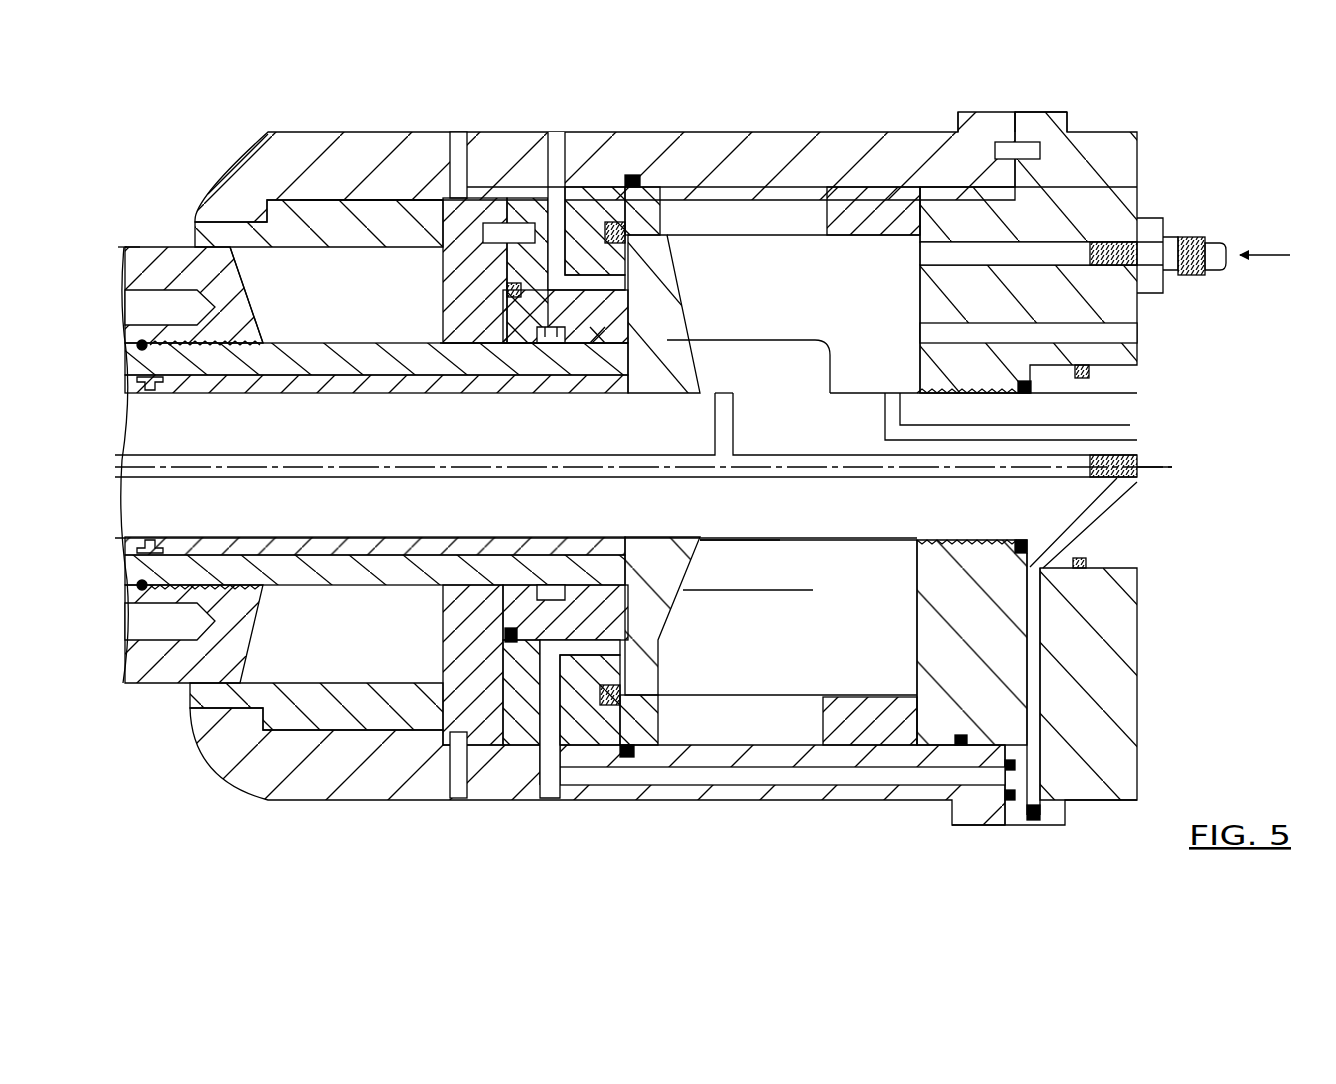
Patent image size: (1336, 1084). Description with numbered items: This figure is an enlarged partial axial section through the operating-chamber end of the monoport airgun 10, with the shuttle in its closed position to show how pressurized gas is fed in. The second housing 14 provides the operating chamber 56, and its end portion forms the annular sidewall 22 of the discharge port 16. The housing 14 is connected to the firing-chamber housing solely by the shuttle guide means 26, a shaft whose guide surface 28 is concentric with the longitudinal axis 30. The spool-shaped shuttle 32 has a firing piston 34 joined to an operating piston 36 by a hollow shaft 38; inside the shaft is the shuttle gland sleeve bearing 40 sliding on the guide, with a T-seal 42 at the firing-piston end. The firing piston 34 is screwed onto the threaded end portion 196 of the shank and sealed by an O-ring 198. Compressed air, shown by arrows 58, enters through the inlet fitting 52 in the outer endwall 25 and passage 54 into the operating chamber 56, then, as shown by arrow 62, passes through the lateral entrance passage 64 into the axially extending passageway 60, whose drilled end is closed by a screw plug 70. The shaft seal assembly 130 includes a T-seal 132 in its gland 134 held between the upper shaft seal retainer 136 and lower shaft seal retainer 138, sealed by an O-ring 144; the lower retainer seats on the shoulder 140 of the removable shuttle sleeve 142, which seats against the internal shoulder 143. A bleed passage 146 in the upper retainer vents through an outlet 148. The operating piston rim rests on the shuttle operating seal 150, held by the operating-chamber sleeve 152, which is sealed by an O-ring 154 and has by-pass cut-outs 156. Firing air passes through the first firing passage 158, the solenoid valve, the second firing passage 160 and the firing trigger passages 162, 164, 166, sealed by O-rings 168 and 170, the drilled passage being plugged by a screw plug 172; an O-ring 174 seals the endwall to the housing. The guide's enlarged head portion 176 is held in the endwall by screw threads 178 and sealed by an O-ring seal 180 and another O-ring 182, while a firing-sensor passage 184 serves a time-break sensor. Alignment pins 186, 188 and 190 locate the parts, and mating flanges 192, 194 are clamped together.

The monoport airgun 10 is at (1035, 58).
The second housing 14 is at (517, 132).
The discharge port 16 is at (155, 158).
The annular sidewall 22 is at (262, 170).
The outer endwall 25 is at (1128, 635).
The shuttle guide means 26 is at (772, 548).
The guide surface 28 is at (707, 590).
The longitudinal axis 30 is at (985, 480).
The shuttle 32 is at (367, 335).
The firing piston 34 is at (130, 243).
The operating piston 36 is at (680, 258).
The hollow shaft 38 is at (300, 345).
The shuttle gland sleeve bearing 40 is at (470, 345).
The T-seal 42 is at (165, 390).
The inlet fitting 52 is at (1188, 237).
The passage 54 is at (1060, 250).
The operating chamber 56 is at (733, 283).
The infeed arrows 58 is at (1262, 255).
The axially extending passageway 60 is at (588, 455).
The compressed air flow arrow 62 is at (728, 388).
The lateral entrance passage 64 is at (735, 430).
The screw plug 70 is at (1122, 458).
The shuttle shaft seal assembly 130 is at (395, 360).
The T-seal 132 is at (540, 343).
The gland 134 is at (612, 343).
The upper shaft seal retainer 136 is at (630, 175).
The lower shaft seal retainer 138 is at (455, 272).
The shoulder 140 is at (448, 198).
The removable shuttle sleeve 142 is at (374, 205).
The internal shoulder 143 is at (283, 198).
The O-ring 144 is at (503, 635).
The bleed passage 146 is at (585, 235).
The outlet 148 is at (552, 195).
The shuttle operating seal 150 is at (650, 200).
The operating-chamber sleeve 152 is at (870, 200).
The O-ring 154 is at (627, 760).
The by-pass cut-outs 156 is at (850, 205).
The first firing passage 158 is at (1120, 333).
The second firing passage 160 is at (1098, 512).
The firing trigger passage 162 is at (1035, 725).
The firing trigger passage 164 is at (818, 785).
The firing trigger passage 166 is at (535, 710).
The O-ring 168 is at (1005, 800).
The O-ring 170 is at (565, 750).
The screw plug 172 is at (1040, 822).
The O-ring 174 is at (958, 748).
The enlarged head portion 176 is at (1128, 395).
The screw threads 178 is at (940, 540).
The O-ring seal 180 is at (1022, 540).
The O-ring 182 is at (1090, 563).
The firing-sensor passage 184 is at (1128, 430).
The alignment pin 186 is at (1038, 150).
The alignment pin 188 is at (483, 233).
The second alignment pin 190 is at (458, 185).
The mating flange 192 is at (988, 112).
The mating flange 194 is at (1050, 112).
The threaded end portion 196 is at (245, 575).
The O-ring 198 is at (165, 575).